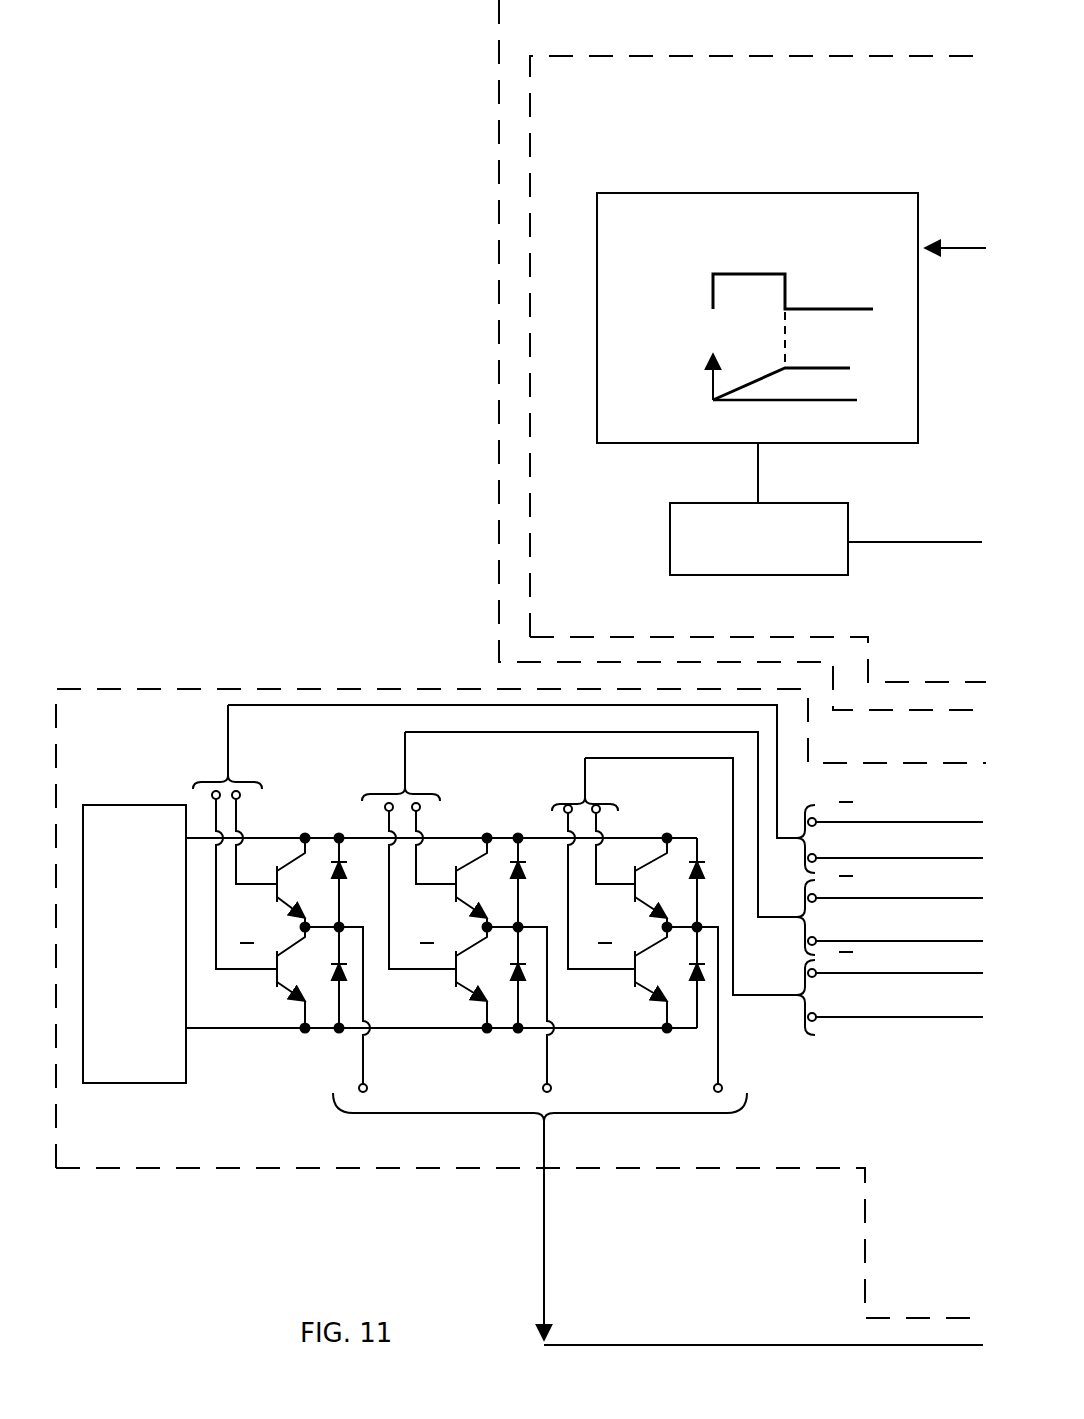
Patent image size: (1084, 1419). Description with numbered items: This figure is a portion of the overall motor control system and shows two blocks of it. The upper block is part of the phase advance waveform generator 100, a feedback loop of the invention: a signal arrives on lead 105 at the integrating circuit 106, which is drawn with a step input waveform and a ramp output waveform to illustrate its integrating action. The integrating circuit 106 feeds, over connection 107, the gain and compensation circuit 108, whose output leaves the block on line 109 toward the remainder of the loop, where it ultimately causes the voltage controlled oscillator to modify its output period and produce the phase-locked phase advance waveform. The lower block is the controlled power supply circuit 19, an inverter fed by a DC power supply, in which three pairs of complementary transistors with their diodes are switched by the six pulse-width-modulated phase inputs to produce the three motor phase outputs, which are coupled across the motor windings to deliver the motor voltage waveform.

The controlled power supply circuit 19 is at (153, 689).
The phase advance waveform generator 100 is at (627, 55).
The lead 105 is at (968, 247).
The integrating circuit 106 is at (729, 192).
The integrator output line 107 is at (760, 477).
The gain and compensation circuit 108 is at (848, 523).
The output line 109 is at (942, 537).